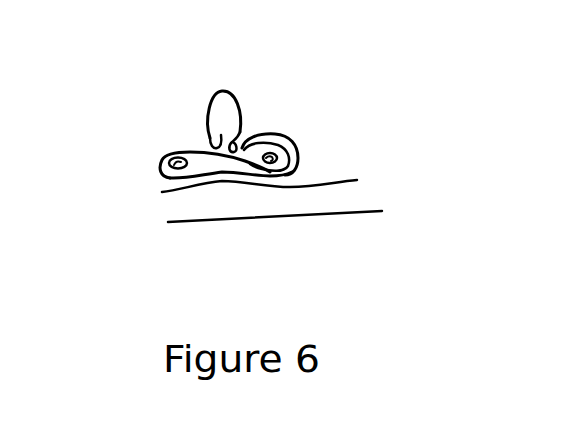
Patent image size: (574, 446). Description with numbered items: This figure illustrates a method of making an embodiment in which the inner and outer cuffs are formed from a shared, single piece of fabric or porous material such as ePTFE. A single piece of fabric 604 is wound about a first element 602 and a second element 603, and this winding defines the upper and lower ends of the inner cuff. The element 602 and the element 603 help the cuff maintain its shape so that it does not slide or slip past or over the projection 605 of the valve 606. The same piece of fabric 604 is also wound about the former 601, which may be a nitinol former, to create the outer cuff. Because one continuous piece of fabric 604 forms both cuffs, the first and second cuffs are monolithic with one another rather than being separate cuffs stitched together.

The former 601 is at (242, 127).
The element 602 is at (297, 152).
The element 603 is at (170, 168).
The single piece of fabric 604 is at (298, 150).
The projection 605 is at (222, 190).
The valve 606 is at (317, 213).